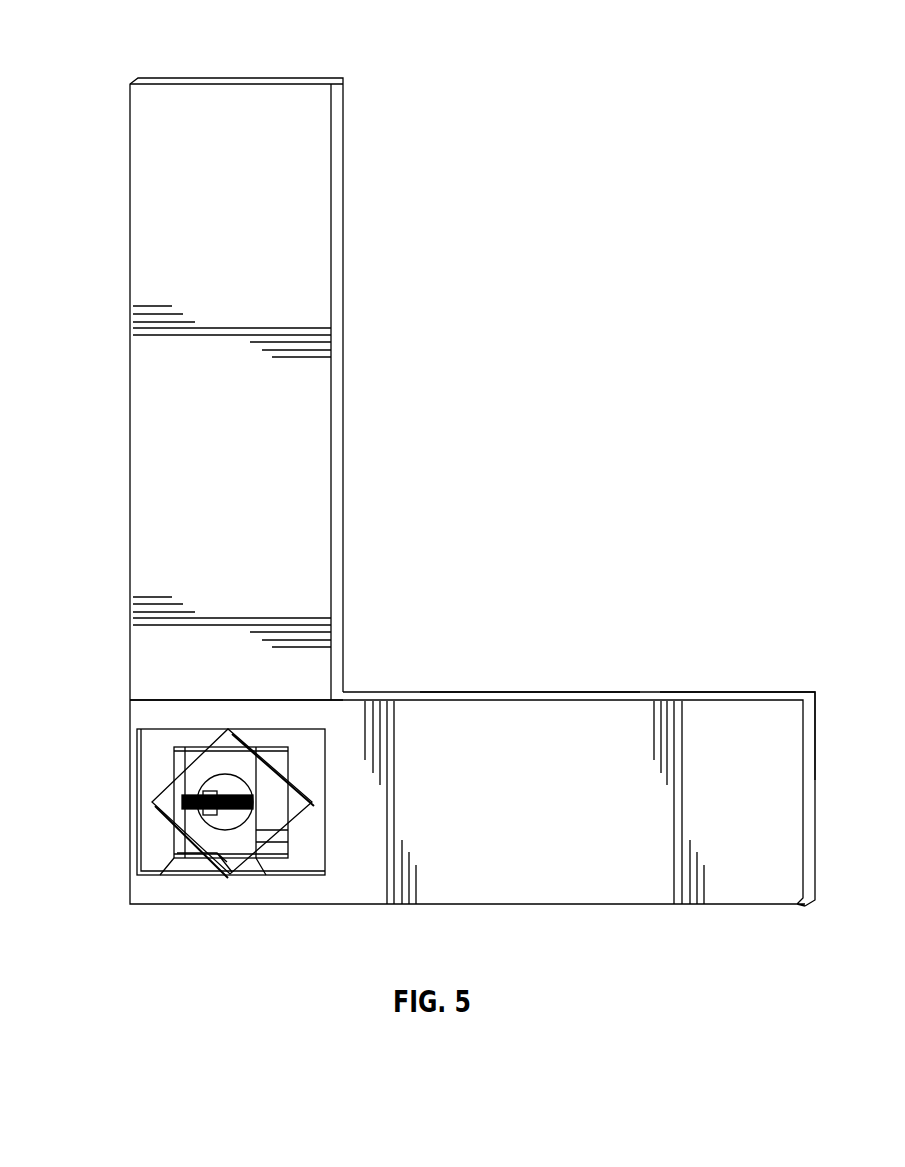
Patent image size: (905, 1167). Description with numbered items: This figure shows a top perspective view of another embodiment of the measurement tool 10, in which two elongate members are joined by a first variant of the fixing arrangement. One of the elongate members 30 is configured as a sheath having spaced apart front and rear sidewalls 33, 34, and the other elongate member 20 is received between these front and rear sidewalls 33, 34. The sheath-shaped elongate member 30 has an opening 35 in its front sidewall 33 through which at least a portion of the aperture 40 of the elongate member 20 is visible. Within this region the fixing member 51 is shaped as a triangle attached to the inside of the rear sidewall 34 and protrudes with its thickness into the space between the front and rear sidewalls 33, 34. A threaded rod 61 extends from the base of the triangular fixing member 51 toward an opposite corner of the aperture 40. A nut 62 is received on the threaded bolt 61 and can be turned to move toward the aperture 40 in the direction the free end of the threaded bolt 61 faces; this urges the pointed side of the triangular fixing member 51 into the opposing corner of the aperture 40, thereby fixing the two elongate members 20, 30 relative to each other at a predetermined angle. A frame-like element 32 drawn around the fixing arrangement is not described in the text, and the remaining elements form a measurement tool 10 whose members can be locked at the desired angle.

The measurement tool 10 is at (153, 42).
The elongate member 20 is at (333, 352).
The elongate member 30 is at (492, 636).
The mounting frame 32 is at (203, 782).
The front sidewall 33 is at (552, 712).
The rear sidewall 34 is at (675, 691).
The opening 35 is at (327, 862).
The aperture 40 is at (203, 748).
The fixing member 51 is at (262, 842).
The threaded rod 61 is at (250, 810).
The nut 62 is at (203, 830).